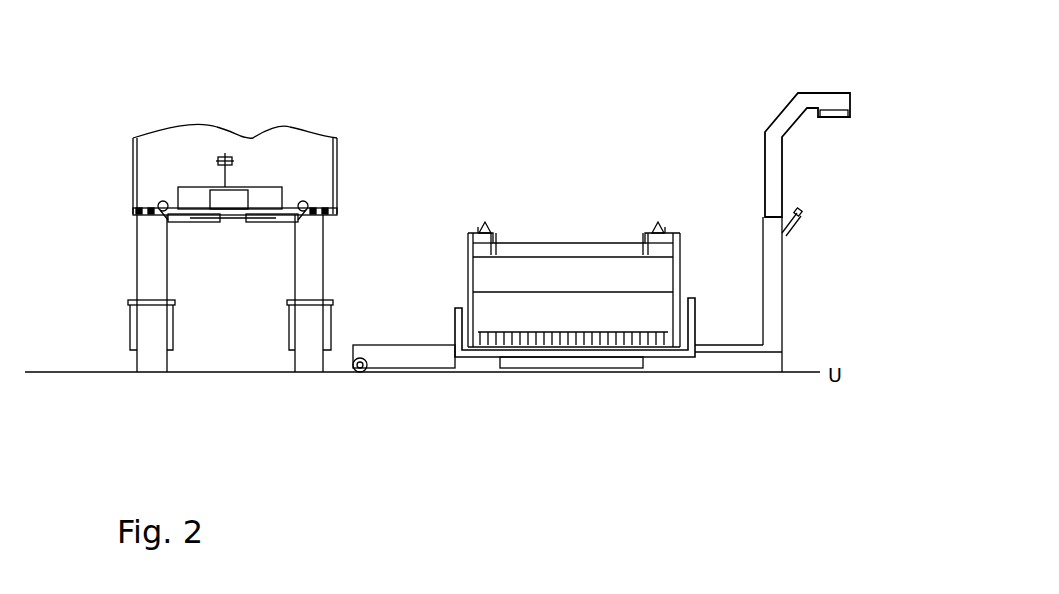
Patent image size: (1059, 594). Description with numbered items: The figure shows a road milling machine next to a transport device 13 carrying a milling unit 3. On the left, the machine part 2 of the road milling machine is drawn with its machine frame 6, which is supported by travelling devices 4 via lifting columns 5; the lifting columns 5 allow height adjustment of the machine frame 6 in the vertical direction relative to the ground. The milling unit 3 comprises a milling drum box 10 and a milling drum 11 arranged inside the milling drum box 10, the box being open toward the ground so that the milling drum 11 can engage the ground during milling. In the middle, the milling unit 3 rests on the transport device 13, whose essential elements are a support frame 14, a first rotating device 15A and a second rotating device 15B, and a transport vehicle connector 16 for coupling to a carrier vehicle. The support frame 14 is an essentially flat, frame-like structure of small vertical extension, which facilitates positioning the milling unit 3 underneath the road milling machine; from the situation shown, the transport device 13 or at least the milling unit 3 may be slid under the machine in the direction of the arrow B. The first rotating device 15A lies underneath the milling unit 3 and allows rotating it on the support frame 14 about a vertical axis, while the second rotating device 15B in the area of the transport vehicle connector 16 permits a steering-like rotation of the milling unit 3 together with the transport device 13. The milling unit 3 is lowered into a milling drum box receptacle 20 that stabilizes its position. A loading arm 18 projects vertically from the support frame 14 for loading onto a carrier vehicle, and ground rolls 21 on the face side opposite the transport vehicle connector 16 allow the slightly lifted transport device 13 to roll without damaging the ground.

The machine part 2 is at (296, 80).
The milling unit 3 is at (595, 213).
The travelling devices 4 is at (148, 338).
The lifting columns 5 is at (140, 252).
The machine frame 6 is at (332, 192).
The milling drum box 10 is at (608, 282).
The milling drum 11 is at (533, 343).
The transport device 13 is at (765, 90).
The support frame 14 is at (720, 360).
The first rotating device 15A is at (565, 363).
The second rotating device 15B is at (837, 113).
The transport vehicle connector 16 is at (782, 128).
The loading arm 18 is at (770, 275).
The milling drum box receptacle 20 is at (680, 353).
The ground rolls 21 is at (360, 372).